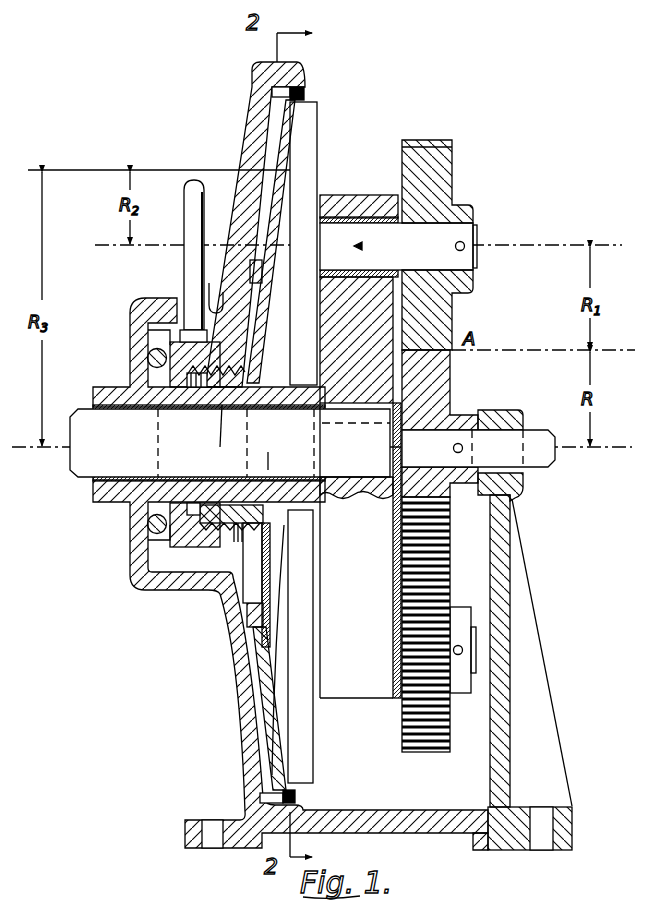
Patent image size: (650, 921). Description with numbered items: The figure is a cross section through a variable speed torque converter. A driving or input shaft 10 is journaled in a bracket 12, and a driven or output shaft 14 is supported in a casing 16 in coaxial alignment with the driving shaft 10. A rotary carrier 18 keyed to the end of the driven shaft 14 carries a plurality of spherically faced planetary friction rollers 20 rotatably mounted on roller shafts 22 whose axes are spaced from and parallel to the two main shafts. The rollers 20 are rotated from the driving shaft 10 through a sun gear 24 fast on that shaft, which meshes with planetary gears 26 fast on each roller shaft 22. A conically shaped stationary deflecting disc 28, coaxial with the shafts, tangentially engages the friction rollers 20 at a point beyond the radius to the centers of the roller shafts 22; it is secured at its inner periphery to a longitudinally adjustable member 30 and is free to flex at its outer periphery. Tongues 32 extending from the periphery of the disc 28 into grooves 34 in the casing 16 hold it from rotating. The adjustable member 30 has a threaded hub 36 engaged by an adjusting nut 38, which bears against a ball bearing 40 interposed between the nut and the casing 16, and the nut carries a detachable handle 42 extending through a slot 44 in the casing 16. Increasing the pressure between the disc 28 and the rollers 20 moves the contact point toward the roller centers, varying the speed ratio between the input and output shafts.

The driving shaft 10 is at (538, 468).
The bracket 12 is at (528, 608).
The driven shaft 14 is at (80, 472).
The casing 16 is at (140, 570).
The rotary carrier 18 is at (347, 698).
The planetary friction rollers 20 is at (315, 130).
The roller shafts 22 is at (477, 240).
The sun gear 24 is at (445, 376).
The planetary gears 26 is at (452, 180).
The deflecting disc 28 is at (278, 134).
The adjustable member 30 is at (248, 292).
The tongues 32 is at (304, 93).
The grooves 34 is at (275, 90).
The threaded hub 36 is at (231, 528).
The adjusting nut 38 is at (167, 338).
The ball bearing 40 is at (148, 355).
The detachable handle 42 is at (191, 180).
The slot 44 is at (186, 298).